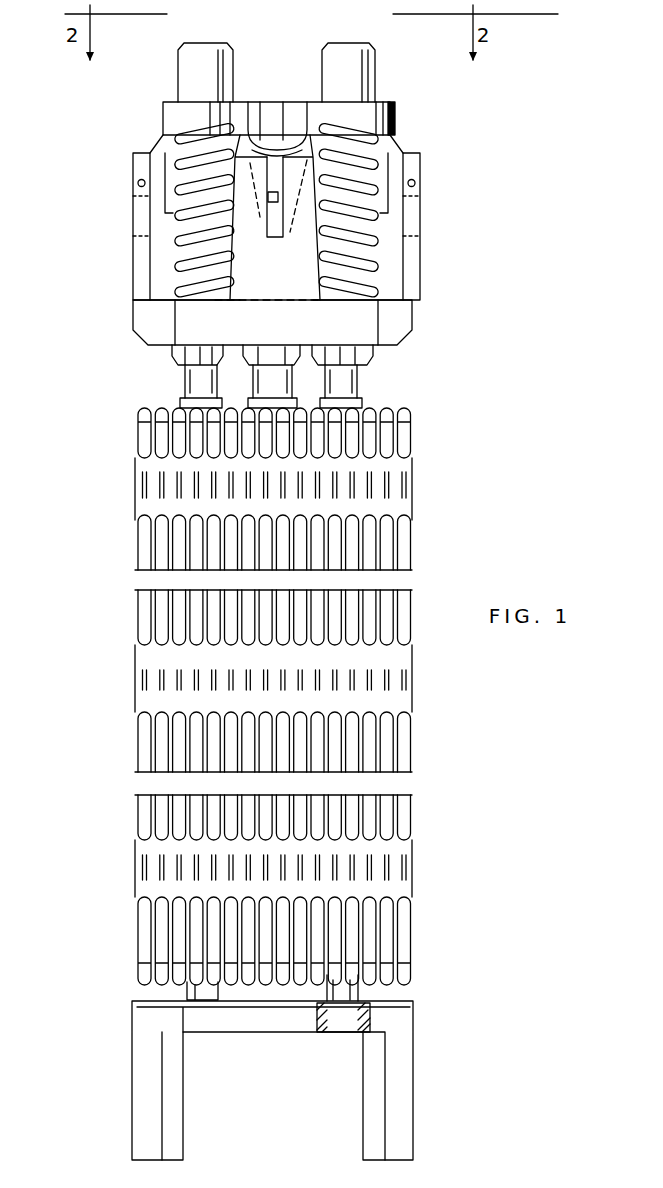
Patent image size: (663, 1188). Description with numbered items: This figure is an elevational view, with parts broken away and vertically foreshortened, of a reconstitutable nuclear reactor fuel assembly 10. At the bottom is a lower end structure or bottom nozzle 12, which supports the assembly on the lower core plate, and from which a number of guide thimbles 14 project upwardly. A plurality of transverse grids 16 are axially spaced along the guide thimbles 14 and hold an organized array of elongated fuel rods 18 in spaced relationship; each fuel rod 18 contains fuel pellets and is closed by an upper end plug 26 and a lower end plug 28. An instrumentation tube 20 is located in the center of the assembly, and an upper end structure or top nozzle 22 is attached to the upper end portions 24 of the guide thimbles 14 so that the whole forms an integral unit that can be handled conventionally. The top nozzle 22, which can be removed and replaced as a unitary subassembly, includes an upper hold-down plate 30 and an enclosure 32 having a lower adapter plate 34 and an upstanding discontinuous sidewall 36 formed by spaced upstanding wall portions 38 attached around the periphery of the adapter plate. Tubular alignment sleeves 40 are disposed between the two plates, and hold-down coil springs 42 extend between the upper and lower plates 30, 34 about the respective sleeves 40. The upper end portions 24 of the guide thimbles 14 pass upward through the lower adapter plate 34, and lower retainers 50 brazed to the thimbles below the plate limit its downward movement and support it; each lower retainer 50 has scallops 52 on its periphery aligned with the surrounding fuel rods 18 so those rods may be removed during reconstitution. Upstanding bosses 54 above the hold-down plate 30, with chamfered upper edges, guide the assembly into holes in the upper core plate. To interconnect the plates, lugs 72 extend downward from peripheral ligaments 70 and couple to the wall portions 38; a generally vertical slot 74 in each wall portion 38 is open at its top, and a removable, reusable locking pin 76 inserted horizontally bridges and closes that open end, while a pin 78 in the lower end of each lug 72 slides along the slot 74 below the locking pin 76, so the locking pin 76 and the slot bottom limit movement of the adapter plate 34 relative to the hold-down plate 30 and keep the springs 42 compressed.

The fuel assembly 10 is at (468, 440).
The bottom nozzle 12 is at (415, 1066).
The guide thimbles 14 is at (185, 390).
The grids 16 is at (413, 487).
The fuel rods 18 is at (148, 818).
The instrumentation tube 20 is at (270, 361).
The top nozzle 22 is at (445, 142).
The upper end portions 24 is at (184, 374).
The upper end plug 26 is at (140, 420).
The lower end plug 28 is at (140, 968).
The upper hold-down plate 30 is at (398, 118).
The enclosure 32 is at (432, 325).
The lower adapter plate 34 is at (412, 314).
The discontinuous sidewall 36 is at (130, 282).
The wall portions 38 is at (133, 211).
The alignment sleeves 40 is at (185, 258).
The hold-down coil springs 42 is at (178, 226).
The lower retainers 50 is at (172, 351).
The scallops 52 is at (372, 360).
The bosses 54 is at (328, 42).
The ligaments 70 is at (238, 108).
The lugs 72 is at (304, 104).
The slot 74 is at (268, 206).
The locking pin 76 is at (134, 181).
The pin 78 is at (266, 190).